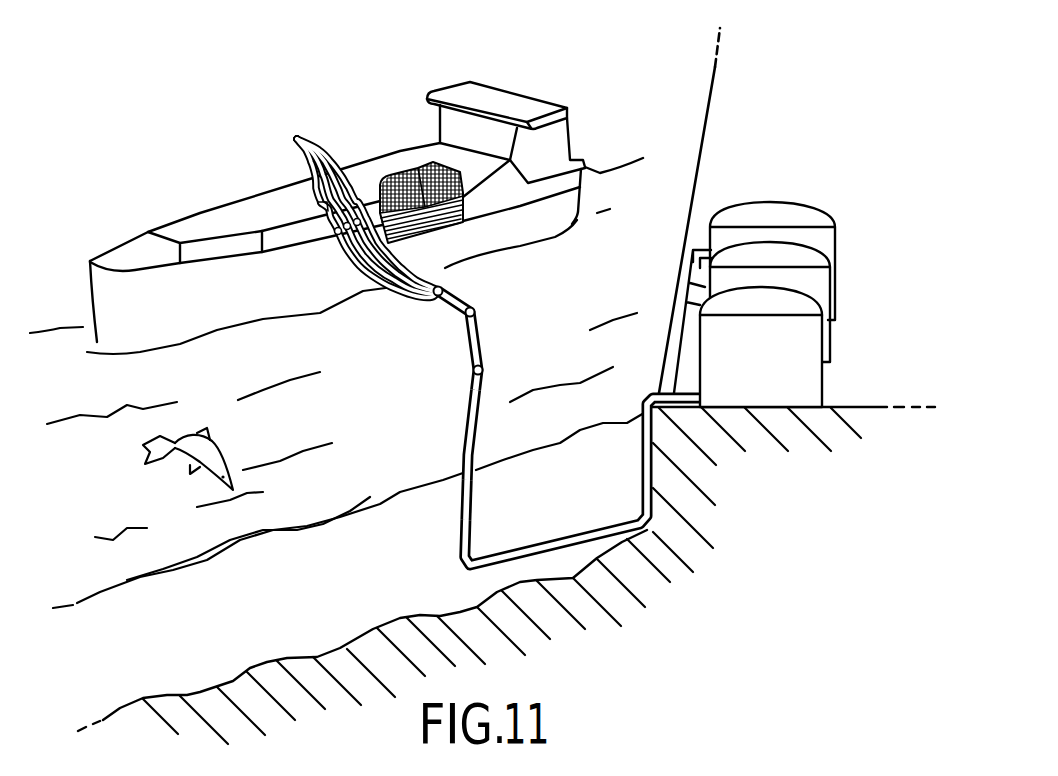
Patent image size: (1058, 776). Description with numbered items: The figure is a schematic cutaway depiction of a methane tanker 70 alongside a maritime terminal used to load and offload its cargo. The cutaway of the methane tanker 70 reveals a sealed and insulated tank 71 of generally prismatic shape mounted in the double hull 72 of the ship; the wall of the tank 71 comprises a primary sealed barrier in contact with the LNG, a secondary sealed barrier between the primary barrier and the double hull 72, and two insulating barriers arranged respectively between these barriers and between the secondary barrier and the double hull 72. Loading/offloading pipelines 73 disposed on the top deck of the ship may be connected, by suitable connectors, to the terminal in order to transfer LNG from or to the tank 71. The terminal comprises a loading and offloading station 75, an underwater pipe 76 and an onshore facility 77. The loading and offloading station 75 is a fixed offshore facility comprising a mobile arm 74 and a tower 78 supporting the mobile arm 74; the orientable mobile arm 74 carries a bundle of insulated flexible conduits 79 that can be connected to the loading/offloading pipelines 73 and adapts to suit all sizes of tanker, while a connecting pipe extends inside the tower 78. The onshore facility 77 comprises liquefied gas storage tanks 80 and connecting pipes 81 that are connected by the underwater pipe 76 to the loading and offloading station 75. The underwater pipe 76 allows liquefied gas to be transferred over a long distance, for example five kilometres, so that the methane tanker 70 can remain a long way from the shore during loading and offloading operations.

The methane tanker 70 is at (538, 88).
The sealed and insulated tank 71 is at (417, 181).
The double hull 72 is at (463, 224).
The loading/offloading pipelines 73 is at (299, 139).
The mobile arm 74 is at (485, 342).
The loading and offloading station 75 is at (458, 438).
The underwater pipe 76 is at (558, 537).
The onshore facility 77 is at (783, 172).
The tower 78 is at (462, 498).
The bundle of insulated flexible conduits 79 is at (418, 312).
The liquefied gas storage tanks 80 is at (737, 204).
The connecting pipes 81 is at (680, 328).